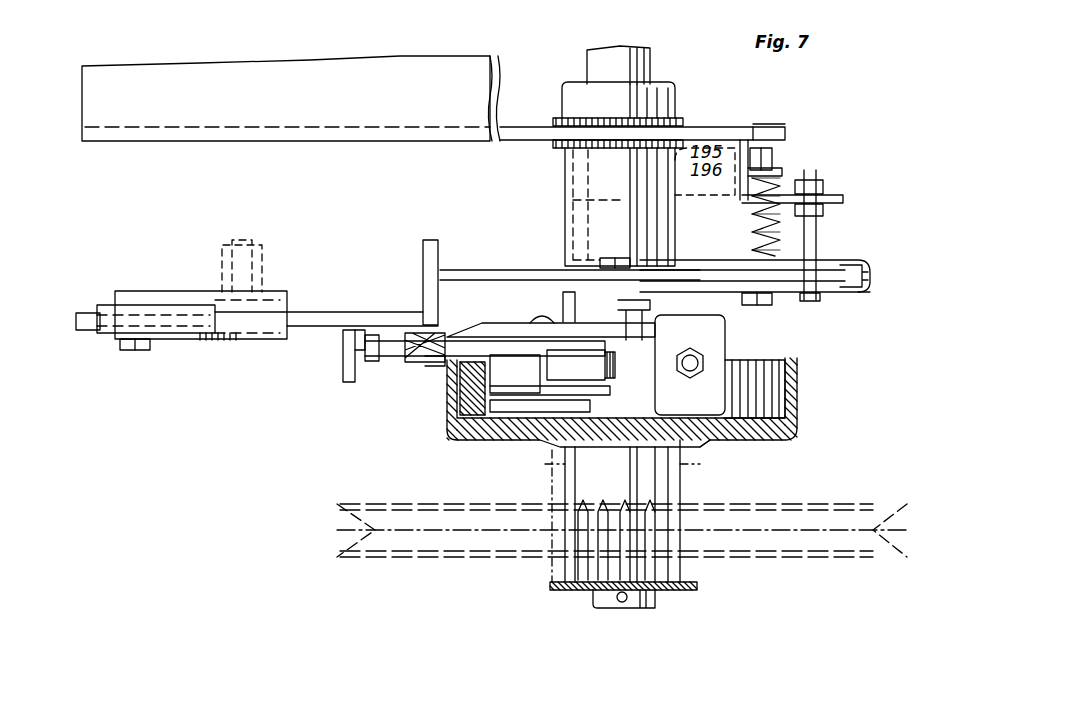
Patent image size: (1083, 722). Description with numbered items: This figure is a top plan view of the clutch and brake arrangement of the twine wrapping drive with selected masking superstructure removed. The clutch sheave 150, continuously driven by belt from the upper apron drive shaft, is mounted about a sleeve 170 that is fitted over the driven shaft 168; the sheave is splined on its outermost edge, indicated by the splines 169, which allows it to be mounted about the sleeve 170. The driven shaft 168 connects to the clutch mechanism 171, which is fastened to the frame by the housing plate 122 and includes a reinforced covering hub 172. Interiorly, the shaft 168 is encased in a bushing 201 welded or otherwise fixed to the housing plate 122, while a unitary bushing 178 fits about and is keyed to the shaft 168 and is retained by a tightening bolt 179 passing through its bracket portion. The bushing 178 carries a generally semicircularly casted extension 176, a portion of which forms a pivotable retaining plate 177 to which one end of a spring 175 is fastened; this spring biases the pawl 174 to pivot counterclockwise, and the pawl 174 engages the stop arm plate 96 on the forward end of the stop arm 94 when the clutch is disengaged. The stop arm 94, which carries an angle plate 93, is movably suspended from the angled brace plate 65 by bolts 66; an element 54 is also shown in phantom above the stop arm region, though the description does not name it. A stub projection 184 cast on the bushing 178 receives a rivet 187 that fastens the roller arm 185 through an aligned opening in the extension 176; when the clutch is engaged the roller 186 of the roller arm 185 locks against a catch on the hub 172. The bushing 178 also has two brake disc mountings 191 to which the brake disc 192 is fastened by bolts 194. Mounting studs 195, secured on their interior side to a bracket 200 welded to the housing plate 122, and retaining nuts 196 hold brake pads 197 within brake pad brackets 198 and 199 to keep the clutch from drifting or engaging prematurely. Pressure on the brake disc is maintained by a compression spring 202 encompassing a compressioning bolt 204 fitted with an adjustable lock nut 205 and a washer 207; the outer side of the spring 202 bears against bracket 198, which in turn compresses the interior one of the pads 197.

The housing plate 122 is at (276, 56).
The driven shaft 168 is at (618, 54).
The bushing 201 is at (668, 86).
The adjustable lock nut 205 is at (776, 154).
The washer 207 is at (784, 172).
The mounting studs 195 is at (824, 182).
The retaining nuts 196 is at (824, 198).
The bracket 200 is at (844, 200).
The compression spring 202 is at (748, 230).
The bolts 194 is at (624, 258).
The brake pads 197 is at (868, 264).
The brake pad bracket 198 is at (874, 268).
The brake pad bracket 199 is at (860, 296).
The compressioning bolt 204 is at (758, 305).
The brake disc 192 is at (468, 272).
The angle plate 93 is at (432, 240).
The bolt 54 is at (262, 262).
The stop arm 94 is at (300, 312).
The rivet 187 is at (522, 303).
The generally semicircularly casted extension 176 is at (551, 310).
The pivotable retaining plate 177 is at (485, 331).
The brake disc mountings 191 is at (668, 306).
The roller 186 is at (630, 358).
The tightening bolt 179 is at (705, 358).
The bolts 66 is at (140, 350).
The angled brace plate 65 is at (218, 340).
The stop arm plate 96 is at (348, 382).
The pawl 174 is at (404, 364).
The spring 175 is at (430, 366).
The roller arm 185 is at (456, 392).
The stub projection 184 is at (545, 410).
The unitary bushing 178 is at (730, 394).
The clutch mechanism 171 is at (815, 372).
The reinforced covering hub 172 is at (764, 442).
The sleeve 170 is at (686, 452).
The clutch sheave 150 is at (852, 500).
The splines 169 is at (700, 576).